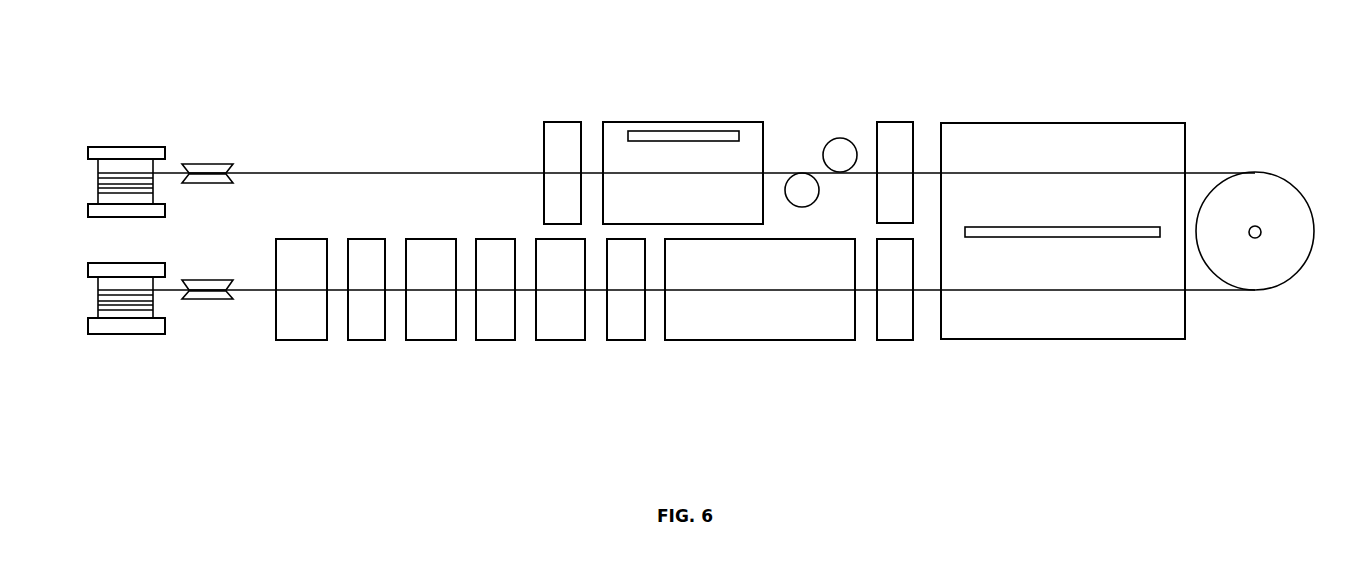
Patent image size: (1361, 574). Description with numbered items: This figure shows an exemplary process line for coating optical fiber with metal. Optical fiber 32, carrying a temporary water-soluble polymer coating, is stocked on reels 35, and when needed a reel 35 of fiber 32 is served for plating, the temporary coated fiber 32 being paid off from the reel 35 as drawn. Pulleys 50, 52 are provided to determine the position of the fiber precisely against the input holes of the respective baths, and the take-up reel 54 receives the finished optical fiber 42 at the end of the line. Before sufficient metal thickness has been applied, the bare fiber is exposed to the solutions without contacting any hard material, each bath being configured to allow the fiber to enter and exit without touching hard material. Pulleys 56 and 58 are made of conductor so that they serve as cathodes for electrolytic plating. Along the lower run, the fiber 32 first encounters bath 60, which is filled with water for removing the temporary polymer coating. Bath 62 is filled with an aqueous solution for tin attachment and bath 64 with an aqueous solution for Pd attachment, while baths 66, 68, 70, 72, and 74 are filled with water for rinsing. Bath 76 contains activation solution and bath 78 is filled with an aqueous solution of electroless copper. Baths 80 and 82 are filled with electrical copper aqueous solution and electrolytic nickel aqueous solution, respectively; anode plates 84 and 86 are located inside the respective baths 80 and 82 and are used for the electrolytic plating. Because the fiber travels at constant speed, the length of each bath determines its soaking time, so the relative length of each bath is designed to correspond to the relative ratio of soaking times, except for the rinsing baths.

The optical fiber 32 is at (255, 288).
The reel 35 is at (145, 334).
The finished optical fiber 42 is at (390, 172).
The pulley 50 is at (207, 299).
The pulley 52 is at (208, 183).
The take-up reel 54 is at (132, 147).
The pulley 56 is at (1302, 193).
The pulley 58 is at (800, 172).
The bath 60 is at (300, 340).
The bath 62 is at (432, 340).
The bath 64 is at (561, 340).
The bath 66 is at (366, 340).
The bath 68 is at (495, 340).
The bath 70 is at (893, 340).
The bath 72 is at (895, 122).
The bath 74 is at (563, 122).
The bath 76 is at (626, 340).
The bath 78 is at (760, 340).
The bath 80 is at (1060, 339).
The bath 82 is at (655, 122).
The anode plate 84 is at (1115, 227).
The anode plate 86 is at (720, 131).